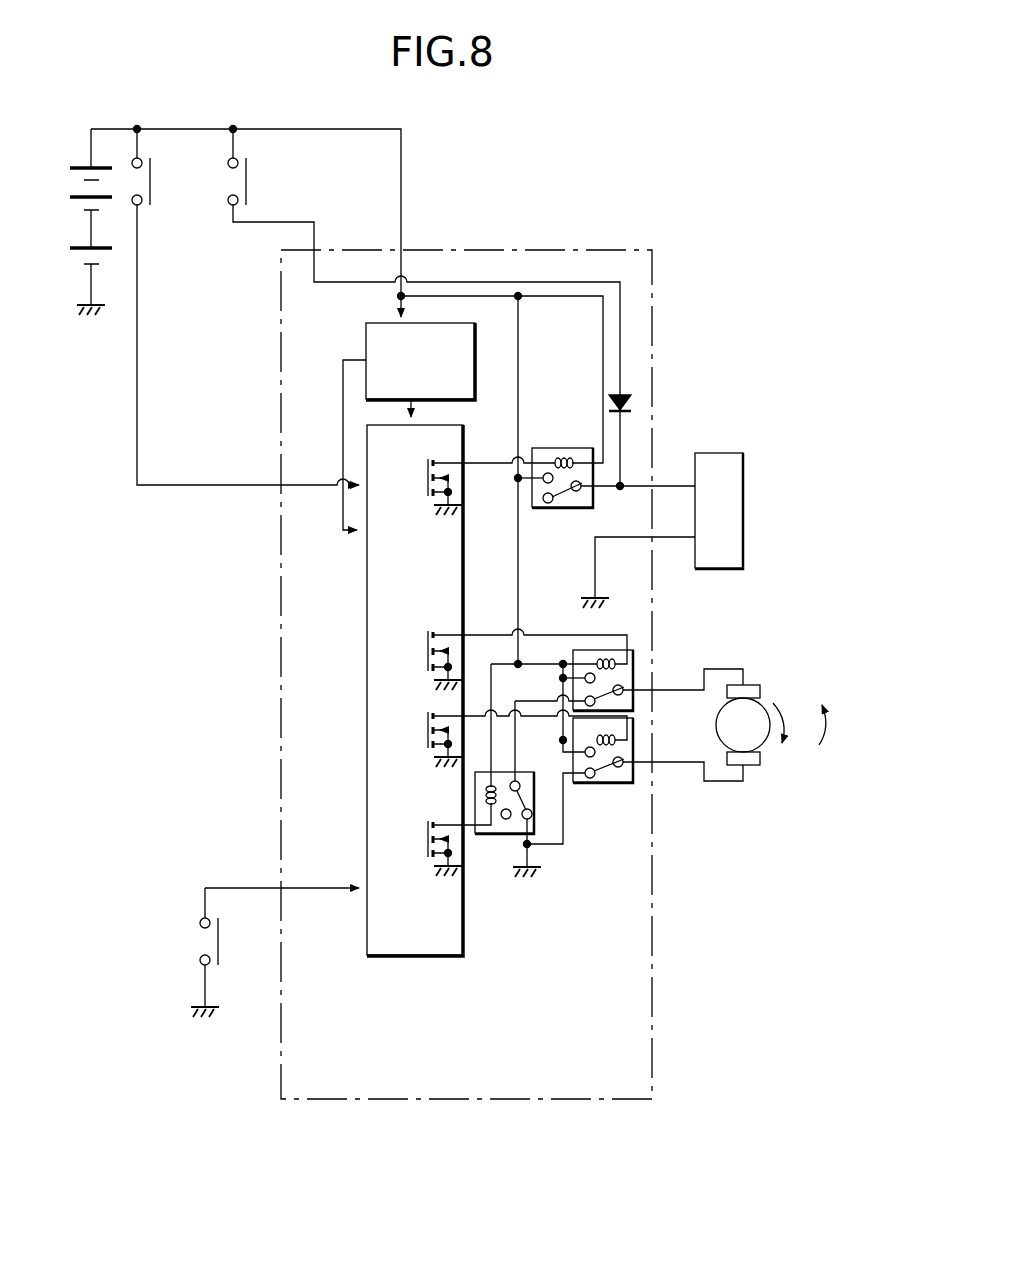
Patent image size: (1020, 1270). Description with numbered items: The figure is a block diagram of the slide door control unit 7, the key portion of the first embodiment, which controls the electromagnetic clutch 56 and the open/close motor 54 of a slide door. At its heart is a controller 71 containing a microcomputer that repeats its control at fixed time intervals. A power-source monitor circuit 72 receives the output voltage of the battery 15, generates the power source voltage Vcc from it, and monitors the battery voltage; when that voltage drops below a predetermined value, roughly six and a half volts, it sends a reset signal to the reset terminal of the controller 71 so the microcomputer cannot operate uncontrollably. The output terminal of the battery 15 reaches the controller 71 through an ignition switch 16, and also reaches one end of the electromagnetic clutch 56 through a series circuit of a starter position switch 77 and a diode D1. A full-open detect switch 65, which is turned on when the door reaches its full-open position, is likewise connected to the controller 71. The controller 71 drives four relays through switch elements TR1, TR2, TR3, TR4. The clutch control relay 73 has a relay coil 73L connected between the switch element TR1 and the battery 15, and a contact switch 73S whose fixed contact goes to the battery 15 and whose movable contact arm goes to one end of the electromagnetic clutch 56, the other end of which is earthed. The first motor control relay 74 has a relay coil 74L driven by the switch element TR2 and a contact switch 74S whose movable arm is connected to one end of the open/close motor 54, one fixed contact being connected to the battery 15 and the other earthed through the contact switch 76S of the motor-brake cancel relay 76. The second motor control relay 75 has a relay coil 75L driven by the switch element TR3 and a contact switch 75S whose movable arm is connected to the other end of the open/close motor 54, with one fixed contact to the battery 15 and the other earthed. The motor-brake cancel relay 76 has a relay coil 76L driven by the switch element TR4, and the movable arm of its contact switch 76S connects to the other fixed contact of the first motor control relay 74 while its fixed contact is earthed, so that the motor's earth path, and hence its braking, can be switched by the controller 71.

The slide door control unit 7 is at (500, 248).
The battery 15 is at (89, 168).
The ignition switch 16 is at (152, 181).
The starter position switch 77 is at (248, 181).
The power-source monitor circuit 72 is at (366, 338).
The controller 71 is at (427, 955).
The clutch control relay 73 is at (562, 465).
The relay coil 73L is at (567, 449).
The contact switch 73S is at (564, 502).
The first motor control relay 74 is at (619, 661).
The relay coil 74L is at (602, 649).
The contact switch 74S is at (608, 695).
The second motor control relay 75 is at (642, 770).
The relay coil 75L is at (620, 742).
The contact switch 75S is at (612, 768).
The motor-brake cancel relay 76 is at (541, 814).
The relay coil 76L is at (494, 808).
The contact switch 76S is at (523, 806).
The diode D1 is at (632, 401).
The electromagnetic clutch 56 is at (718, 453).
The open/close motor 54 is at (751, 685).
The full-open detect switch 65 is at (220, 941).
The switch element TR1 is at (446, 491).
The switch element TR2 is at (428, 652).
The switch element TR3 is at (428, 732).
The switch element TR4 is at (428, 842).